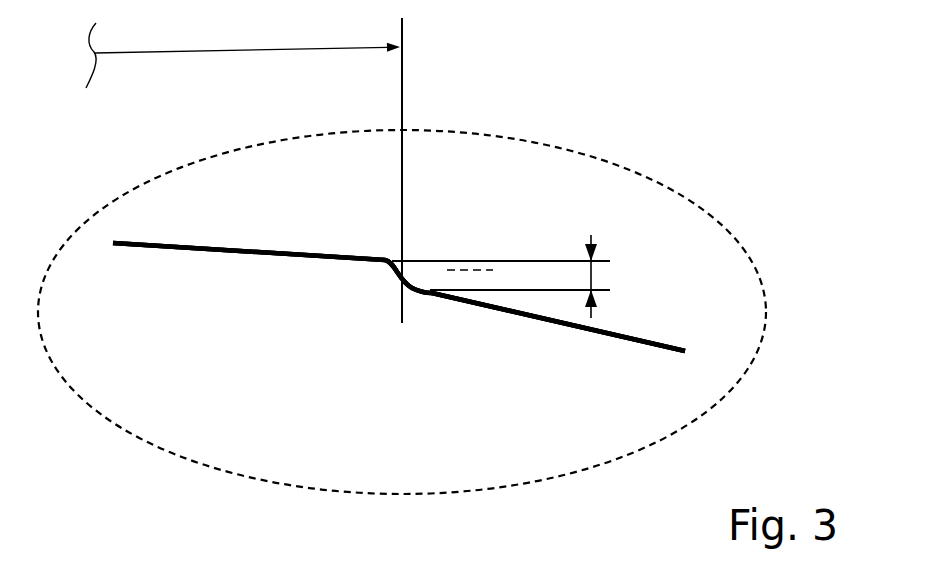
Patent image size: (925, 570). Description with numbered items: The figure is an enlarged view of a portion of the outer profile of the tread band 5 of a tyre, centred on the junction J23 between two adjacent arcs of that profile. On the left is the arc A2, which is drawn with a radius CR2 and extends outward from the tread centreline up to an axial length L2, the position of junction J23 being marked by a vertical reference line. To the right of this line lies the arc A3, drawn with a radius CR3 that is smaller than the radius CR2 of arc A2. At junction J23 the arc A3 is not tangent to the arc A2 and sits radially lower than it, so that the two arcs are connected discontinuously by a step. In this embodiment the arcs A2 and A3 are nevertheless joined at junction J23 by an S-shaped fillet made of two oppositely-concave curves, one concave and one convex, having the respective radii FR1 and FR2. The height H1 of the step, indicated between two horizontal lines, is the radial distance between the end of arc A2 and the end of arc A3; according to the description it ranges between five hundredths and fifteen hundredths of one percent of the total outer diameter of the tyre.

The length L2 is at (243, 55).
The radius of arc A2 CR2 is at (192, 265).
The arc A2 is at (236, 223).
The junction J23 is at (421, 215).
The tread band 5 is at (320, 203).
The fillet radius FR1 is at (383, 280).
The fillet radius FR2 is at (436, 271).
The radius of arc A3 CR3 is at (458, 320).
The arc A3 is at (683, 307).
The height of the step H1 is at (591, 277).